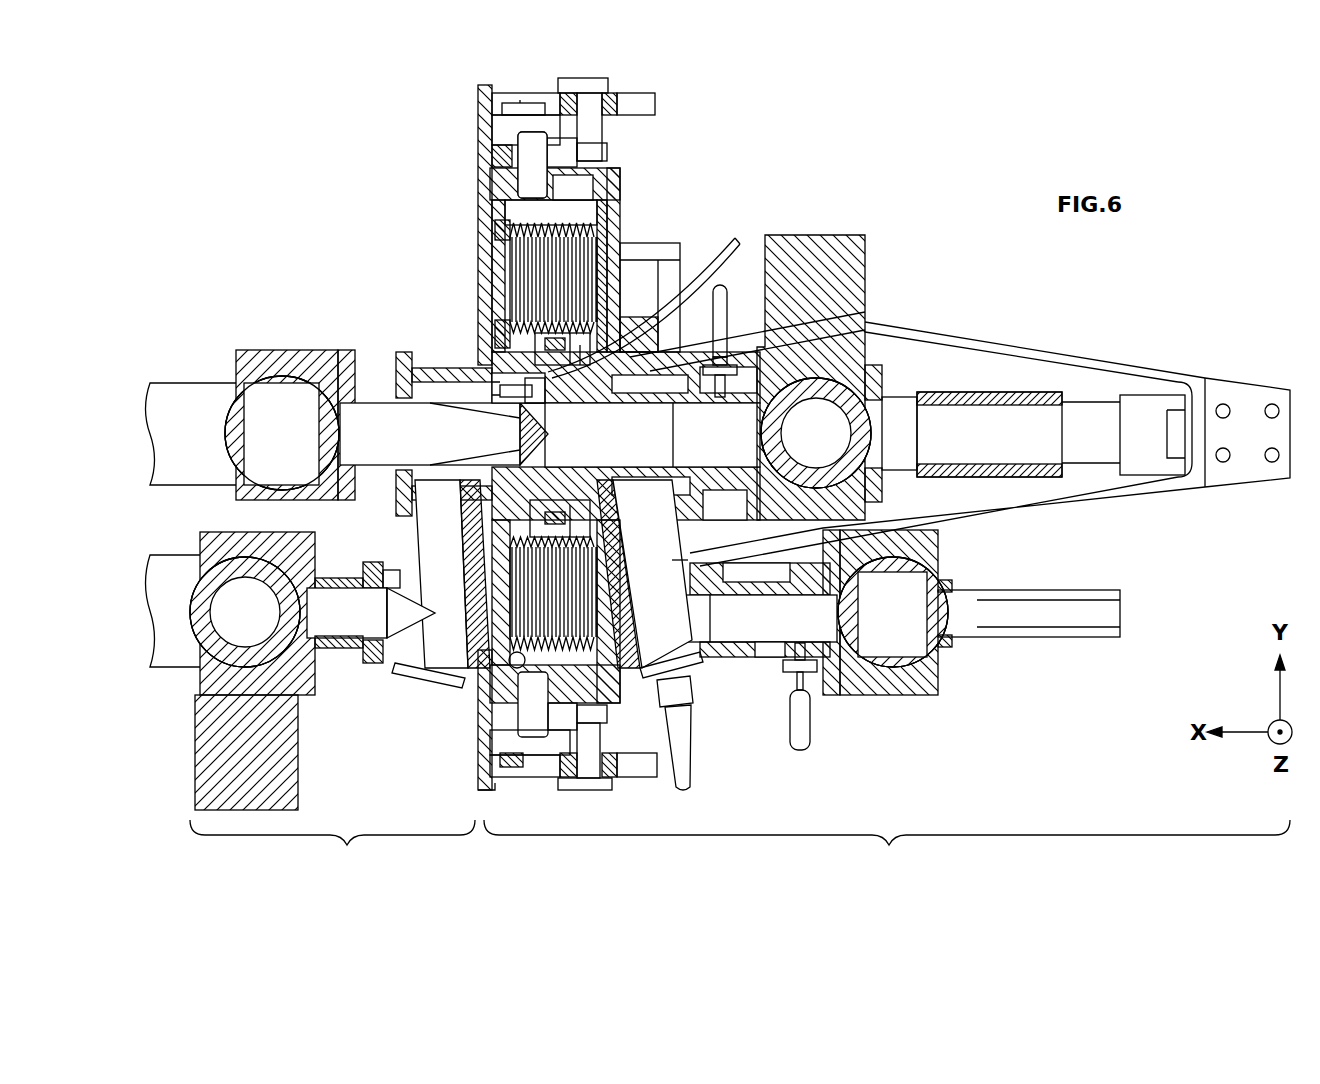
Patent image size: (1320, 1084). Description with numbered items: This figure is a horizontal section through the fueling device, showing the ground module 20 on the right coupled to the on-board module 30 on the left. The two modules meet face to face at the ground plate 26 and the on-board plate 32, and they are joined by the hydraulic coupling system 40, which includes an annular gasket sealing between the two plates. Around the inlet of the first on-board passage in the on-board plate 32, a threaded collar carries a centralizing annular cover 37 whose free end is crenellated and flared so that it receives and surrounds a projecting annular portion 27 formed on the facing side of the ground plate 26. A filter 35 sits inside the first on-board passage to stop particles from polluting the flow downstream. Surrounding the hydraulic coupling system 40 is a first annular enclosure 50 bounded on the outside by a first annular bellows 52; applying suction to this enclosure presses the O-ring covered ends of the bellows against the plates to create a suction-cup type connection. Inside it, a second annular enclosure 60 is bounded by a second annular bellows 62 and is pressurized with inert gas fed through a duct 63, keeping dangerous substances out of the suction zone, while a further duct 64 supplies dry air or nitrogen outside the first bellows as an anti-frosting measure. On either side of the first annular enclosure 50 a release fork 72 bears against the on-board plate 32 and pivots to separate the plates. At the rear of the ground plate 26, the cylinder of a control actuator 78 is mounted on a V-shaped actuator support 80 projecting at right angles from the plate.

The ground module 20 is at (887, 849).
The on-board module 30 is at (332, 849).
The ground plate 26 is at (614, 183).
The projecting annular portion 27 is at (676, 247).
The on-board plate 32 is at (478, 131).
The filter 35 is at (468, 435).
The centralizing annular cover 37 is at (563, 368).
The hydraulic coupling system 40 is at (650, 420).
The first annular enclosure 50 is at (517, 276).
The first annular bellows 52 is at (532, 228).
The second annular enclosure 60 is at (535, 318).
The second annular bellows 62 is at (535, 318).
The duct 63 is at (733, 240).
The duct 64 is at (472, 678).
The release fork 72 is at (510, 100).
The control actuator 78 is at (1100, 417).
The actuator support 80 is at (1199, 388).